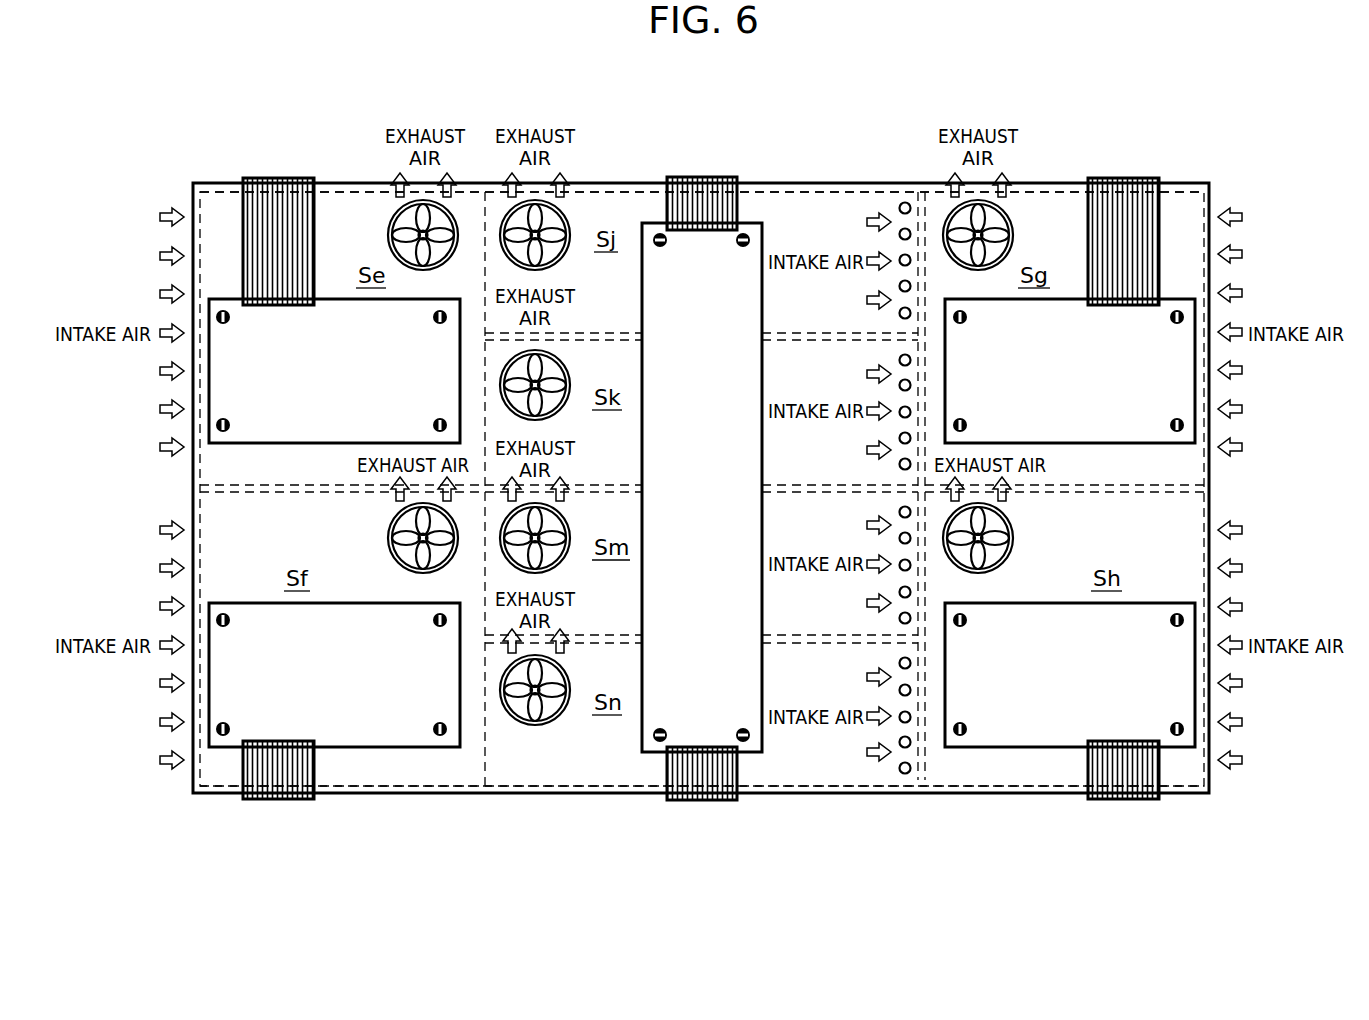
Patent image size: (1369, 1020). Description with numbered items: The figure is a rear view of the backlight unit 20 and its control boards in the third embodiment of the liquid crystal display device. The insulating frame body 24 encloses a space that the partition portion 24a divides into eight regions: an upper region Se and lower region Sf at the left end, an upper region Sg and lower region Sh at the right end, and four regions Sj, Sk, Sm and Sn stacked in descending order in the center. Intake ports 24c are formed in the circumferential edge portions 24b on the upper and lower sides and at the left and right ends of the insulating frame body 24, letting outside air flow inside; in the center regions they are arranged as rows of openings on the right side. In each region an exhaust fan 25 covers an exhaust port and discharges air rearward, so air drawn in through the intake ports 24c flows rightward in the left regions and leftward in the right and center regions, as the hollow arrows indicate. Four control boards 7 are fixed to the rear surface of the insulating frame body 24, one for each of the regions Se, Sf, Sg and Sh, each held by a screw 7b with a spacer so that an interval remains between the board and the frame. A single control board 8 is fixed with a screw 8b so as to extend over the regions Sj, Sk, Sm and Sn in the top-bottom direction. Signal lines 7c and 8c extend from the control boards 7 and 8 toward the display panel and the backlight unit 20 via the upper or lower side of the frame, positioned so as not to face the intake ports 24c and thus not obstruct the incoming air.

The backlight unit 20 is at (150, 112).
The insulating frame body 24 is at (187, 180).
The partition portion 24a is at (250, 493).
The circumferential edge portion 24b is at (806, 185).
The intake port 24c is at (905, 195).
The control board 7 is at (343, 383).
The screw 7b is at (231, 322).
The signal line 7c is at (285, 176).
The control board 8 is at (711, 453).
The screw 8b is at (660, 248).
The signal line 8c is at (702, 175).
The exhaust fan 25 is at (387, 235).